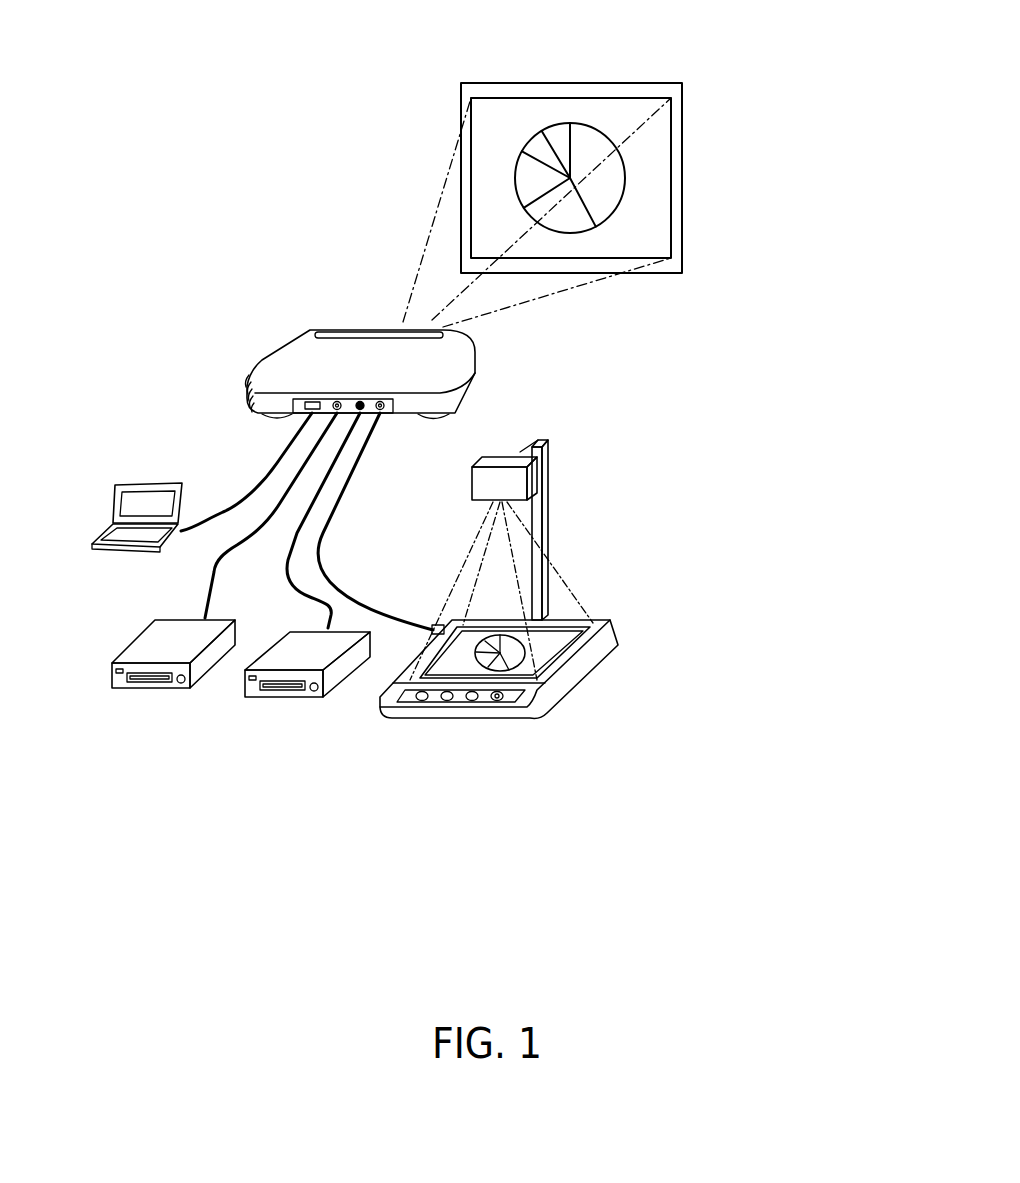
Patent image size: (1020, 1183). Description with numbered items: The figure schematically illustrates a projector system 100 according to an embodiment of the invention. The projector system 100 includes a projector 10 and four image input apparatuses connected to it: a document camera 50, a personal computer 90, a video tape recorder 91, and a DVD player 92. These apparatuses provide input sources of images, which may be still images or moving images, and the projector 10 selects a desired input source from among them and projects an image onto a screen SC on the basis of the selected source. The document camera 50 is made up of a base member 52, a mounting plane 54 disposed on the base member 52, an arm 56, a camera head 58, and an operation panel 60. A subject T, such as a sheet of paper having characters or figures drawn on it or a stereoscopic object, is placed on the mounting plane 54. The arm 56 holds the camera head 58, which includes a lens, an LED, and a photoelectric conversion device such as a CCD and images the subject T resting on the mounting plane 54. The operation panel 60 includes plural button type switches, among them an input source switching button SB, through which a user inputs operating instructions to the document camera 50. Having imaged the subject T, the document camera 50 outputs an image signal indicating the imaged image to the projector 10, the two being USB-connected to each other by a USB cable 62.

The projector system 100 is at (250, 290).
The projector 10 is at (463, 355).
The screen SC is at (565, 83).
The document camera 50 is at (638, 556).
The base member 52 is at (562, 690).
The mounting plane 54 is at (593, 622).
The arm 56 is at (547, 493).
The camera head 58 is at (493, 462).
The operation panel 60 is at (433, 698).
The input source switching button SB is at (493, 702).
The USB cable 62 is at (322, 535).
The subject T is at (567, 650).
The personal computer 90 is at (122, 552).
The video tape recorder 91 is at (148, 690).
The DVD player 92 is at (280, 698).